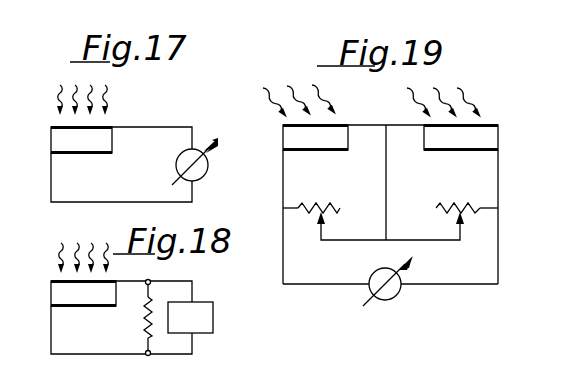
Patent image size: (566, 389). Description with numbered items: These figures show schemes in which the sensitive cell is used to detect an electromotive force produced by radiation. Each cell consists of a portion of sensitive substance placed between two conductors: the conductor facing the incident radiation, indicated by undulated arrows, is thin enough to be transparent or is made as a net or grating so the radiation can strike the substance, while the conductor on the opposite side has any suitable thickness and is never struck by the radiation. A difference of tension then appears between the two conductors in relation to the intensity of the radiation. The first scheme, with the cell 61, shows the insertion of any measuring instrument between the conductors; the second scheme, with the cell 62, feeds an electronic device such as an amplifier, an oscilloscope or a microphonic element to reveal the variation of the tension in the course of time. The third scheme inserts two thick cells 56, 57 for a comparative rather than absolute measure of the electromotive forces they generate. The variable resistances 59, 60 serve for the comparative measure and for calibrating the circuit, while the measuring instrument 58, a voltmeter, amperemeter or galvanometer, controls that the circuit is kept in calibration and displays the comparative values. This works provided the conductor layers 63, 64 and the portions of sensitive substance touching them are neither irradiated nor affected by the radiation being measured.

In FIG. 19, the cell 56 is at (283, 137).
In FIG. 19, the cell 57 is at (498, 137).
In FIG. 19, the measuring instrument 58 is at (398, 290).
In FIG. 19, the variable resistance 59 is at (315, 212).
In FIG. 19, the variable resistance 60 is at (466, 212).
In FIG. 17, the photovoltaic cell 61 is at (64, 156).
In FIG. 18, the photovoltaic cell 62 is at (64, 311).
In FIG. 19, the conductor layer 63 is at (306, 154).
In FIG. 19, the conductor layer 64 is at (430, 154).